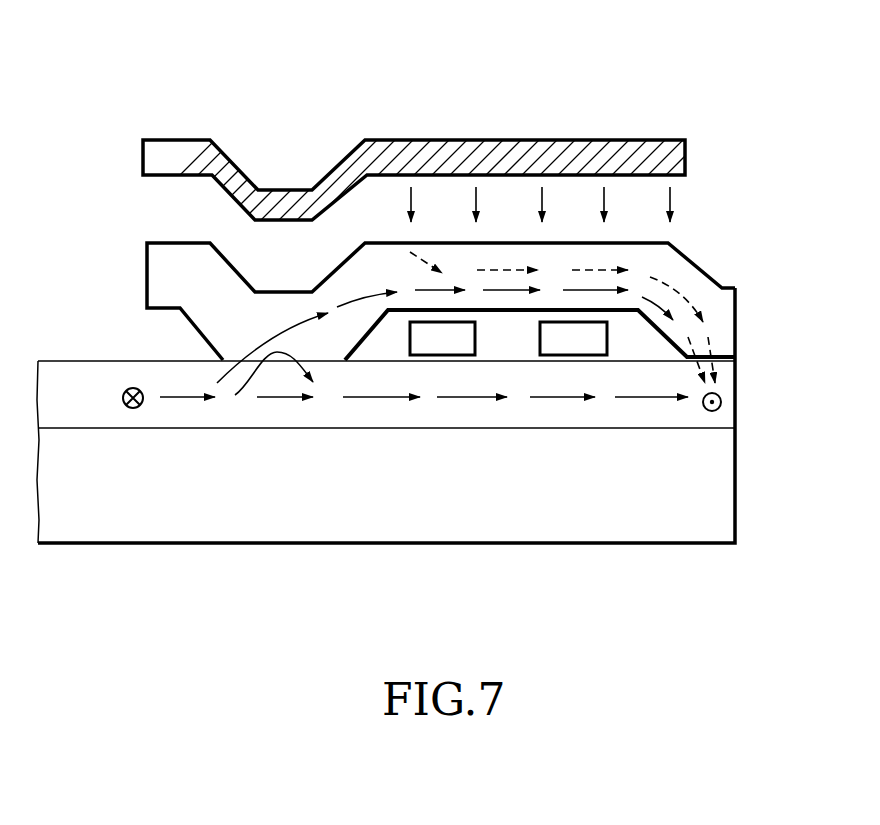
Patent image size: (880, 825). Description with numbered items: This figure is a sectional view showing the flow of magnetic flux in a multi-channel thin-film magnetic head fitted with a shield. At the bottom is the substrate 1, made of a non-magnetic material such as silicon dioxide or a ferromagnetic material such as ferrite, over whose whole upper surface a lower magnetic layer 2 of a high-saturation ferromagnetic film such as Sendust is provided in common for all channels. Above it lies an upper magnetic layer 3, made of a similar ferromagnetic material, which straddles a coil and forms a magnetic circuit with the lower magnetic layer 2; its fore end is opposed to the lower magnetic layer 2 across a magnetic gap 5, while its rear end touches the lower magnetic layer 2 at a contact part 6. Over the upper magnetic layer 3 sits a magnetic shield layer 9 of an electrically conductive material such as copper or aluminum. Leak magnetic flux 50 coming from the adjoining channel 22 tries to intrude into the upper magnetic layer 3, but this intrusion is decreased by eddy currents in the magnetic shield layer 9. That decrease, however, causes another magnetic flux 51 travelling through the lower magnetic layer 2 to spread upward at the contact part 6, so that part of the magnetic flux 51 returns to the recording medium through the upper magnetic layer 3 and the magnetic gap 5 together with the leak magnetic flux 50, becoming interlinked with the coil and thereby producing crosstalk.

The substrate 1 is at (722, 503).
The lower magnetic layer 2 is at (723, 418).
The upper magnetic layer 3 is at (723, 323).
The magnetic gap 5 is at (740, 361).
The contact part 6 is at (236, 358).
The magnetic shield layer 9 is at (682, 157).
The channel 22 is at (707, 265).
The leak magnetic flux 50 is at (670, 192).
The magnetic flux 51 is at (457, 397).